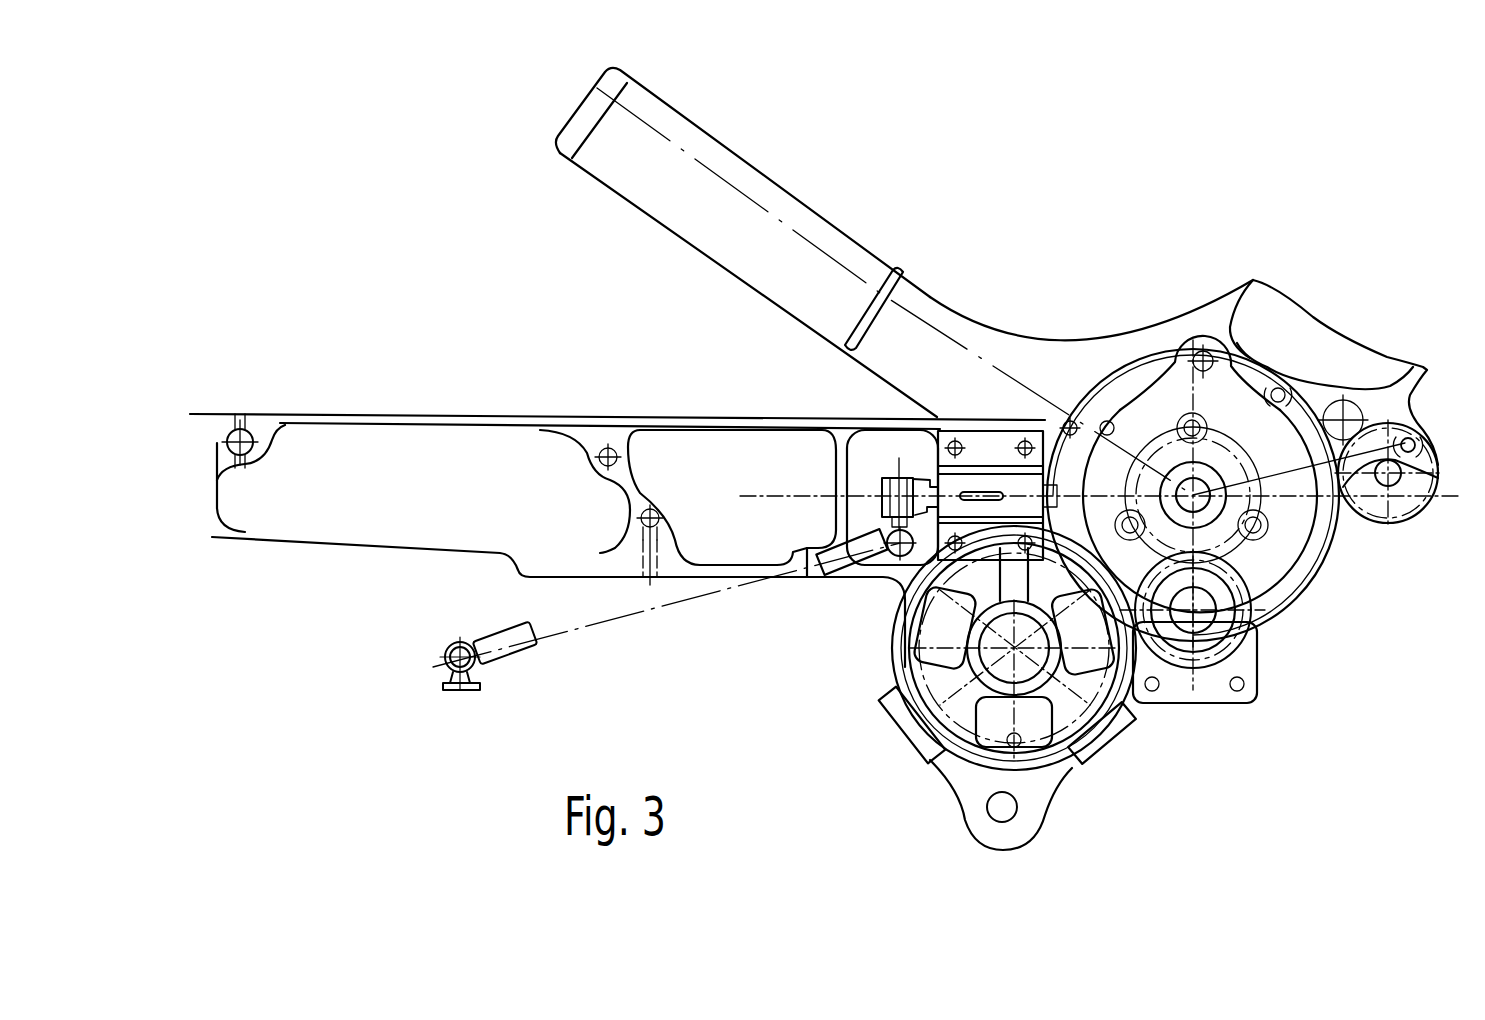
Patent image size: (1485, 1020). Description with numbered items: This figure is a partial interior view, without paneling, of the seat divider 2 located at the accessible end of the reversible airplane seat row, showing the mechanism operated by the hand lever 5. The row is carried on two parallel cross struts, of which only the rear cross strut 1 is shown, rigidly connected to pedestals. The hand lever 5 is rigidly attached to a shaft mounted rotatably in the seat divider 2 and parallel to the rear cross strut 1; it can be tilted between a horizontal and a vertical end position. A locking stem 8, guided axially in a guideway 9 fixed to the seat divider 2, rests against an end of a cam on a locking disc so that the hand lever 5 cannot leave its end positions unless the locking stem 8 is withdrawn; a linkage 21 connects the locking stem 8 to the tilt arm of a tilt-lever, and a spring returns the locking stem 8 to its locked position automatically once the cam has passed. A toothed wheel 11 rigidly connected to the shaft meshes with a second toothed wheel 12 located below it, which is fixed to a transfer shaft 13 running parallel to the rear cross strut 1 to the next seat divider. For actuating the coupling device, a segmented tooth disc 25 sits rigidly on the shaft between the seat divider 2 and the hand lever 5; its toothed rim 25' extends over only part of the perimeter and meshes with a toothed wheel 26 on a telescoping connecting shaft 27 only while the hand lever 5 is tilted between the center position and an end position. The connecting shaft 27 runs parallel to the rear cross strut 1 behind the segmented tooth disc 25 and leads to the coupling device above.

The rear cross strut 1 is at (955, 745).
The seat divider 2 is at (503, 417).
The hand lever 5 is at (785, 208).
The locking stem 8 is at (1050, 497).
The guideway 9 is at (1022, 490).
The toothed wheel 11 is at (1270, 500).
The second toothed wheel 12 is at (1222, 650).
The transfer shaft 13 is at (1260, 655).
The linkage 21 is at (833, 566).
The segmented tooth disc 25 is at (1207, 493).
The toothed rim 25' is at (1337, 362).
The toothed wheel 26 is at (1405, 502).
The telescoping connecting shaft 27 is at (1403, 483).